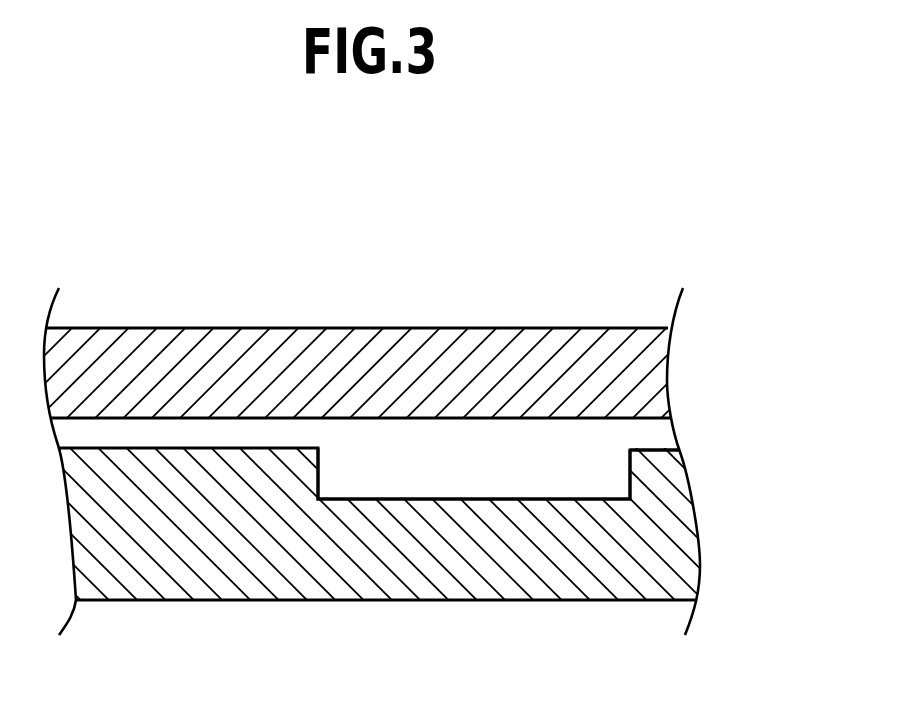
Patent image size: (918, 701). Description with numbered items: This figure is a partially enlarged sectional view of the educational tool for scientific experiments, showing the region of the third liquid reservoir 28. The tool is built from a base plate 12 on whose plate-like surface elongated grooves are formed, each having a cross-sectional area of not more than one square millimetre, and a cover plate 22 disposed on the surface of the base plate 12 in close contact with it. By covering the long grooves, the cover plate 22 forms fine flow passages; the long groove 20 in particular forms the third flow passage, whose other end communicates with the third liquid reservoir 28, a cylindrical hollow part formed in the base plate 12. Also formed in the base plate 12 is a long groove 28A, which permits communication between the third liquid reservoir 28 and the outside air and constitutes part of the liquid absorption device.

The long groove 20 is at (123, 433).
The cover plate 22 is at (647, 372).
The base plate 12 is at (675, 520).
The third liquid reservoir 28 is at (473, 468).
The long groove 28A is at (658, 433).